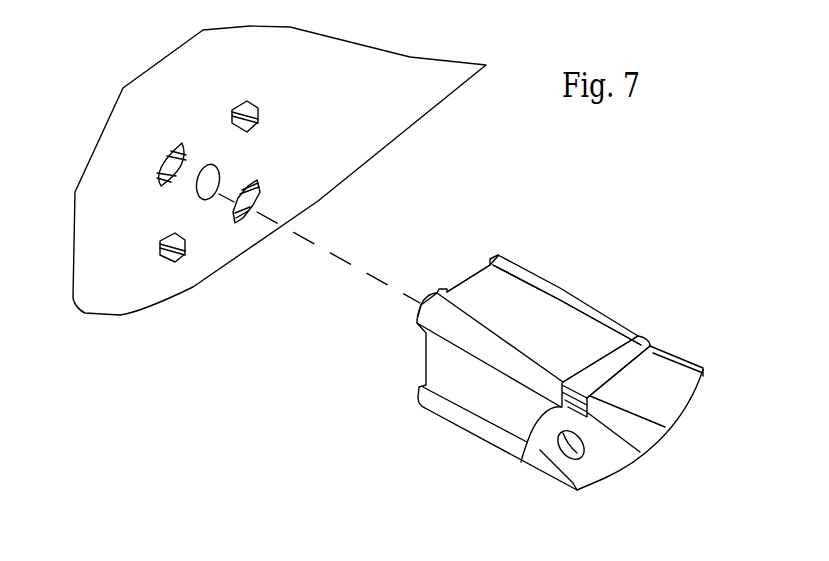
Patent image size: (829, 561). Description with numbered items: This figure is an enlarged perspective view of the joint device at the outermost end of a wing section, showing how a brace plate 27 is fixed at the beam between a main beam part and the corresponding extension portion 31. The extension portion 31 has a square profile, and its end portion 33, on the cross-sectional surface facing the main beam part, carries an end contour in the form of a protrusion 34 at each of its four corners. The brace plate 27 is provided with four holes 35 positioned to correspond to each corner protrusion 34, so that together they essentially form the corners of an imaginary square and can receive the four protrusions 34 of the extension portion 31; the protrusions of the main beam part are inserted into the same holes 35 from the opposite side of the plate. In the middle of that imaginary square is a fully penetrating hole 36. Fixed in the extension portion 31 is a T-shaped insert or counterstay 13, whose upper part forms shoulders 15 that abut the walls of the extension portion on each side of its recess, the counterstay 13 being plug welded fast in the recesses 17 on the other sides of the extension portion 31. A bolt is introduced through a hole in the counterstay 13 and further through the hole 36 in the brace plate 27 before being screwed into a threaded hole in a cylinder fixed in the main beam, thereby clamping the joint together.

The counterstay 13 is at (648, 354).
The shoulders 15 is at (523, 457).
The recesses 17 is at (574, 457).
The brace plate 27 is at (396, 69).
The extension portion 31 is at (572, 320).
The end portions of the extension portions 33 is at (468, 278).
The protrusion 34 is at (498, 255).
The holes 35 is at (259, 113).
The fully penetrating hole 36 is at (213, 166).